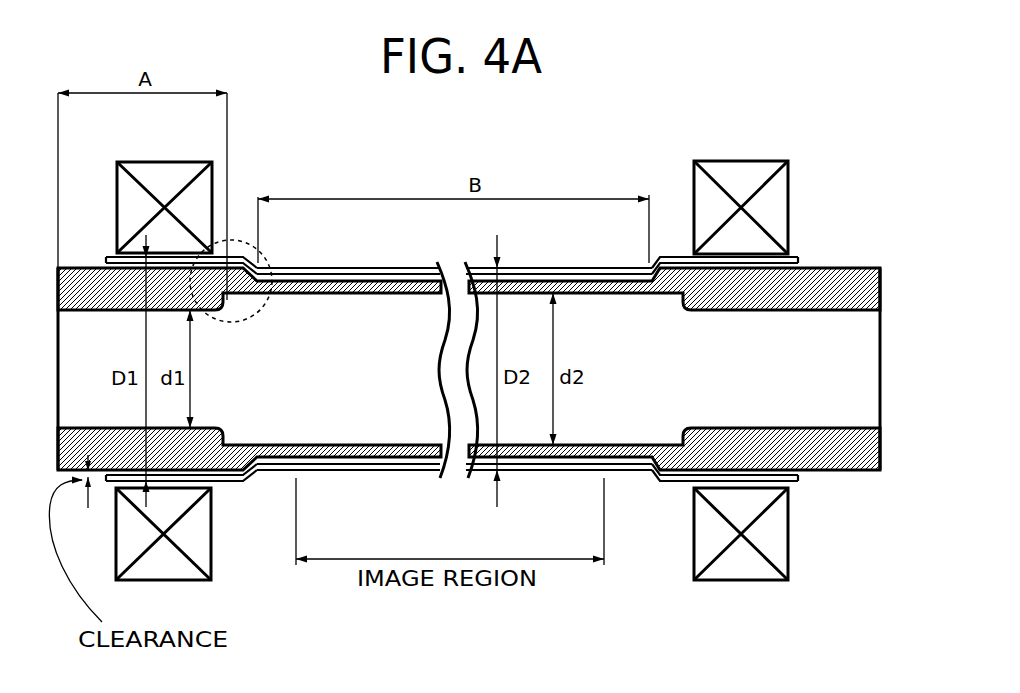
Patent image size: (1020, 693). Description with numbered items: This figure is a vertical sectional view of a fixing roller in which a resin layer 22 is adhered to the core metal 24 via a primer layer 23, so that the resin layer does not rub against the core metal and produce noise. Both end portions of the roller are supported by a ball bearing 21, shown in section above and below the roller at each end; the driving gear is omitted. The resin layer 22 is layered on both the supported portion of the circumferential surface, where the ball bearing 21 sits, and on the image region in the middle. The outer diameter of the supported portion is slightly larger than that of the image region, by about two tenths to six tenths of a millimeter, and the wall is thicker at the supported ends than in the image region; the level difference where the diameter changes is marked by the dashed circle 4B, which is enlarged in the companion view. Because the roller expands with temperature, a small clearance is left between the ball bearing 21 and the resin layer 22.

The ball bearing 21 is at (160, 170).
The resin layer 22 is at (538, 264).
The primer layer 23 is at (800, 260).
The core metal 24 is at (82, 277).
The detail region shown in FIG. 4B is at (242, 238).